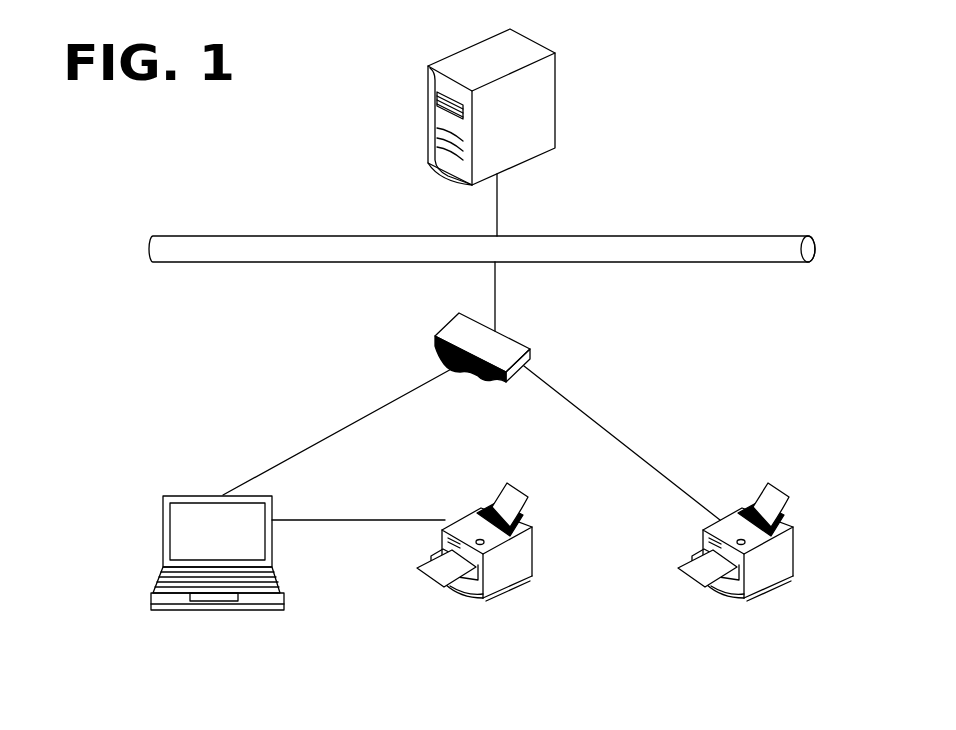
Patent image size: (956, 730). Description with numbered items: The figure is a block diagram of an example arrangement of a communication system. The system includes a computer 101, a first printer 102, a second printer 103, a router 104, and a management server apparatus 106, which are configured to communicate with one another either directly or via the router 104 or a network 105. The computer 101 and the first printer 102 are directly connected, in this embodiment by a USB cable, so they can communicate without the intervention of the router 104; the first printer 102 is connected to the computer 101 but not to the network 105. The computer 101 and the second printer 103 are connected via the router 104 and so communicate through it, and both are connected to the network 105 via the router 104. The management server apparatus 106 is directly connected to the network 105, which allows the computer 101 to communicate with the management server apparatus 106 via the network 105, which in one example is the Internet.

The computer 101 is at (213, 610).
The first printer 102 is at (483, 600).
The second printer 103 is at (743, 600).
The router 104 is at (435, 343).
The network 105 is at (708, 262).
The management server apparatus 106 is at (428, 118).